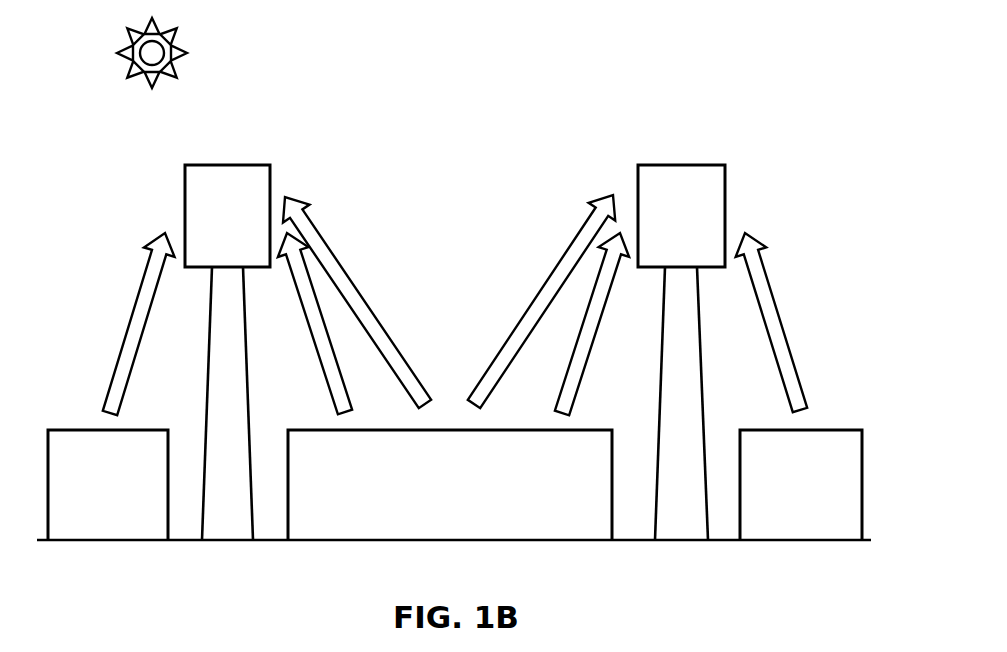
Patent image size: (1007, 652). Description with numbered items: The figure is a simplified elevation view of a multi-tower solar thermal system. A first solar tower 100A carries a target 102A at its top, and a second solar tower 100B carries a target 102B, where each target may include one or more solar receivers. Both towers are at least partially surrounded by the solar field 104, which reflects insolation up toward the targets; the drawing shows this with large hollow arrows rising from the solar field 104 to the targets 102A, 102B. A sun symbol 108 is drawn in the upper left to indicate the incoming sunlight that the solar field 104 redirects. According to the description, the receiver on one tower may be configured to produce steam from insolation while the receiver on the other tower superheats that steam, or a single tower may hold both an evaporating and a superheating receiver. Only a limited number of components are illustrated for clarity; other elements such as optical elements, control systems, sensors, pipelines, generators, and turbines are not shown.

The sun 108 is at (131, 63).
The first solar tower 100A is at (292, 325).
The second solar tower 100B is at (740, 316).
The target 102A is at (227, 216).
The target 102B is at (681, 216).
The solar field 104 is at (455, 485).